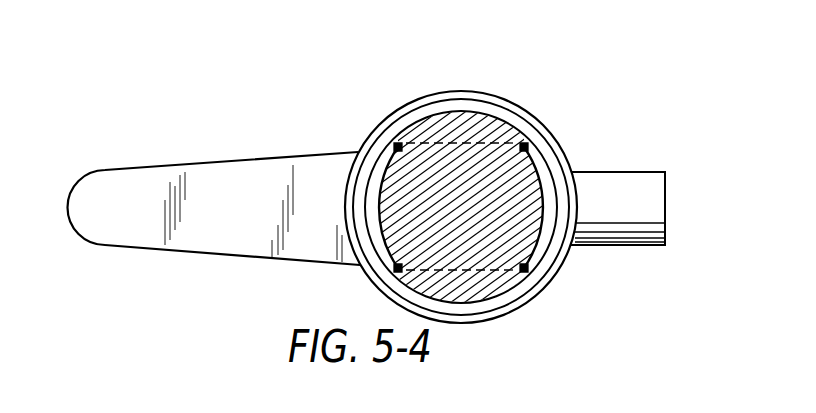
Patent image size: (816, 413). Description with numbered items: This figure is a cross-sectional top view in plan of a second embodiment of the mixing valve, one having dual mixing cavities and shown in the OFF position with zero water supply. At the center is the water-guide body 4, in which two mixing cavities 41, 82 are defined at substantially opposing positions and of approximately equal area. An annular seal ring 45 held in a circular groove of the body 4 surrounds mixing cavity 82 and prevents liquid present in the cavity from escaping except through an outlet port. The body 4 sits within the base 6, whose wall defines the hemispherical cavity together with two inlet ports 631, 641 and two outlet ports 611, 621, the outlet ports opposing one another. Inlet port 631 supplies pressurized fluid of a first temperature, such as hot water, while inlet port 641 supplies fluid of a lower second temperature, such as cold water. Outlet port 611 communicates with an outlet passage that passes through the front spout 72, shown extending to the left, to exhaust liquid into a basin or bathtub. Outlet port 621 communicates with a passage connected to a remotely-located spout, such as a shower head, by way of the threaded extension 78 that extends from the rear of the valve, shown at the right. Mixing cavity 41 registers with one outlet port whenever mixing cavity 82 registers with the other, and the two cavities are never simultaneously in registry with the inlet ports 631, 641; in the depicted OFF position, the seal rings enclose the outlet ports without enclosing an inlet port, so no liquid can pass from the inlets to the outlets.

The water-guide body 4 is at (446, 128).
The mixing cavity 41 is at (378, 188).
The annular seal ring 45 is at (398, 146).
The base 6 is at (565, 263).
The outlet port 611 is at (357, 265).
The outlet port 621 is at (552, 290).
The inlet port 631 is at (467, 157).
The inlet port 641 is at (483, 325).
The front spout 72 is at (162, 168).
The threaded extension 78 is at (665, 208).
The mixing cavity 82 is at (545, 172).